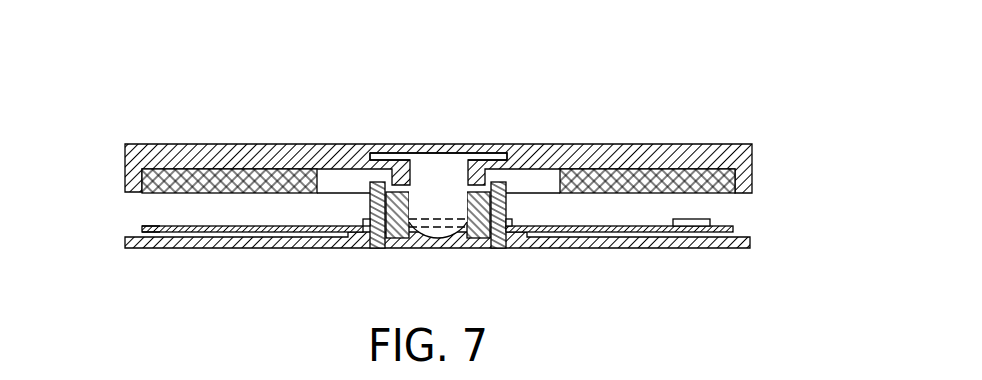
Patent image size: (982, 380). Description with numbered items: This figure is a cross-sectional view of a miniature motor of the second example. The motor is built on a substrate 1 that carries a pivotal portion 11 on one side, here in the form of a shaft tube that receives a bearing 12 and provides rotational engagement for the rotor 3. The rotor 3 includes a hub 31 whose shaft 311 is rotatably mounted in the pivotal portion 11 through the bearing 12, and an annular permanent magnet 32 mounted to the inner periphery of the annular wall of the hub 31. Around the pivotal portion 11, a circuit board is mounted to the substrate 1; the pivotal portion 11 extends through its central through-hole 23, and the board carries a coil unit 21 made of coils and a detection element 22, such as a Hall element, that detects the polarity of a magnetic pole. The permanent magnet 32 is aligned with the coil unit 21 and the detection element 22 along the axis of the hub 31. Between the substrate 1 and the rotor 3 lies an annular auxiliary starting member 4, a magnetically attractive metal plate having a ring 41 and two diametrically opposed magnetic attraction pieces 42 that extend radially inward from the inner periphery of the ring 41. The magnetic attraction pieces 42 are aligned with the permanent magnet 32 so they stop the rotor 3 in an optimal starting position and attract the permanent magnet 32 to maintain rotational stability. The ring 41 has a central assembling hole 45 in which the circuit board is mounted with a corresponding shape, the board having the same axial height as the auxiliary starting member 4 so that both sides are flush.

The substrate 1 is at (168, 247).
The pivotal portion 11 is at (431, 191).
The bearing 12 is at (398, 212).
The coil unit 21 is at (445, 218).
The detection element 22 is at (707, 223).
The central through-hole 23 is at (506, 210).
The rotor 3 is at (469, 126).
The hub 31 is at (735, 145).
The shaft 311 is at (420, 192).
The permanent magnet 32 is at (733, 194).
The auxiliary starting member 4 is at (396, 172).
The ring 41 is at (165, 227).
The magnetic attraction pieces 42 is at (203, 227).
The central assembling hole 45 is at (150, 226).